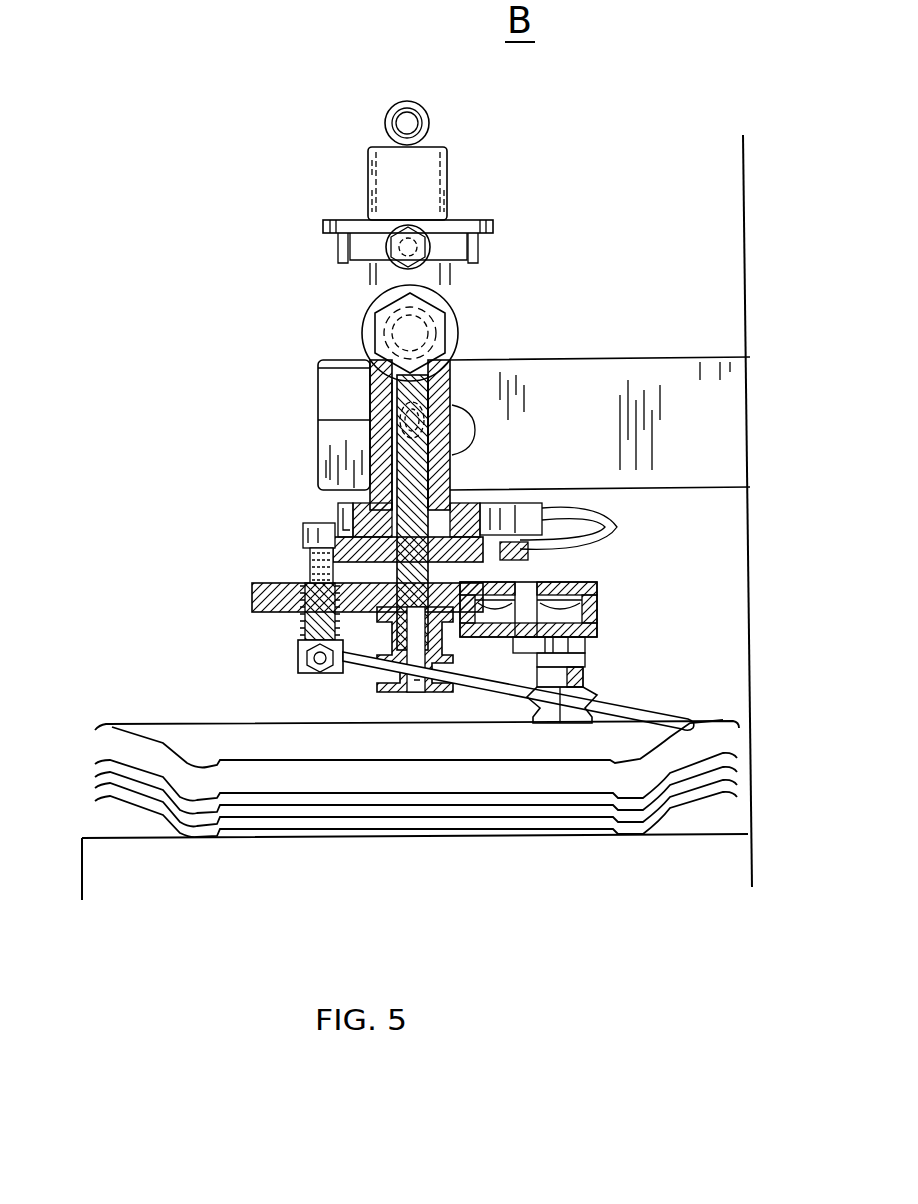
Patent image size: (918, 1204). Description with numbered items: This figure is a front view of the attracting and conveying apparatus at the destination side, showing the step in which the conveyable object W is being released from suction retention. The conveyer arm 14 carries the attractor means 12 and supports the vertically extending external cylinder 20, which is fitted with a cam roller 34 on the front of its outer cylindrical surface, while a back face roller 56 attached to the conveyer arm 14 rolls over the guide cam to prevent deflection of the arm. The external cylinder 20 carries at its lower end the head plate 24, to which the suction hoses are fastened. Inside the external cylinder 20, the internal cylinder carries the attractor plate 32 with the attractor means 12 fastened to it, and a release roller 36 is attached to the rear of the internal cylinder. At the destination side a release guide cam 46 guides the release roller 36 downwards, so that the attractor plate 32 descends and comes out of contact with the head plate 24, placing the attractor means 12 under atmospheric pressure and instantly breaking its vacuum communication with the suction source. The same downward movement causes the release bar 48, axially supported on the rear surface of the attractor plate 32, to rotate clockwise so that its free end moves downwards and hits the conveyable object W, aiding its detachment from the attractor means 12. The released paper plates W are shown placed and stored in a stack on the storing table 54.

The attractor means 12 is at (597, 692).
The conveyer arm 14 is at (463, 222).
The external cylinder 20 is at (368, 182).
The head plate 24 is at (303, 553).
The attractor plate 32 is at (252, 600).
The cam roller 34 is at (362, 330).
The release roller 36 is at (390, 415).
The release guide cam 46 is at (636, 360).
The release bar 48 is at (647, 710).
The storing table 54 is at (448, 855).
The back face roller 56 is at (426, 268).
The conveyable object W is at (190, 722).